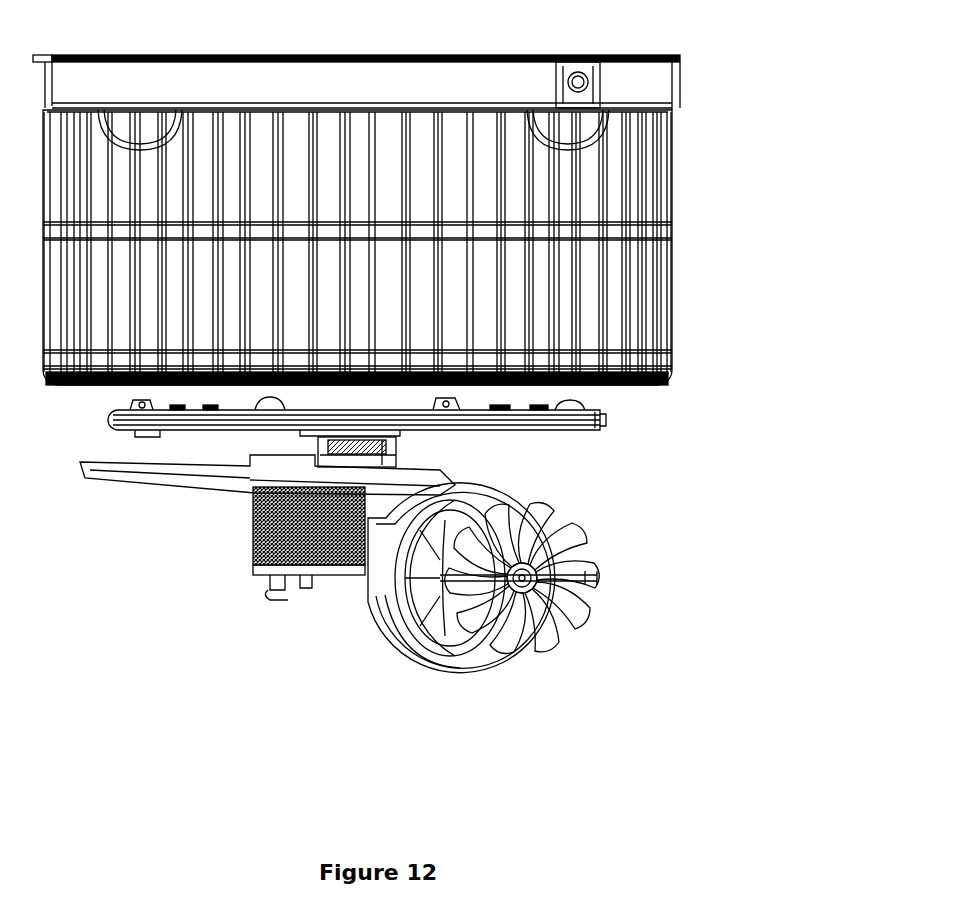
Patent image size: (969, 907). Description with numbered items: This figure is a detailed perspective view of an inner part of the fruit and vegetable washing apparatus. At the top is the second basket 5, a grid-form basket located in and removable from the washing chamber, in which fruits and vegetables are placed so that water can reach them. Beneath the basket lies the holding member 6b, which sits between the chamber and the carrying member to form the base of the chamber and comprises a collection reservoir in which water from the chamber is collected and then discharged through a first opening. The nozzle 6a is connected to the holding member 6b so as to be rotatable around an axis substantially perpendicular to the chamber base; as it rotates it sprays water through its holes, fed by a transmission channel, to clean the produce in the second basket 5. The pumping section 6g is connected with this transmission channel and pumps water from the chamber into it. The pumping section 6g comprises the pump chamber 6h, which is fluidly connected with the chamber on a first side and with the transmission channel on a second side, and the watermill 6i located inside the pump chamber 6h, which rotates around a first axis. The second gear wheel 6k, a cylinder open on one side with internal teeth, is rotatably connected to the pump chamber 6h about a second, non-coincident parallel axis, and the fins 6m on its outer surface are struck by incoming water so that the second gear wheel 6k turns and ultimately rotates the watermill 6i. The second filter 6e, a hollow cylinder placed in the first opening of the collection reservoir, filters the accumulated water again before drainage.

The second basket 5 is at (673, 195).
The nozzle 6a is at (603, 418).
The holding member 6b is at (138, 485).
The second filter 6e is at (257, 543).
The pumping section 6g is at (650, 572).
The pump chamber 6h is at (370, 600).
The watermill 6i is at (405, 603).
The second gear wheel 6k is at (468, 635).
The fins 6m is at (568, 648).